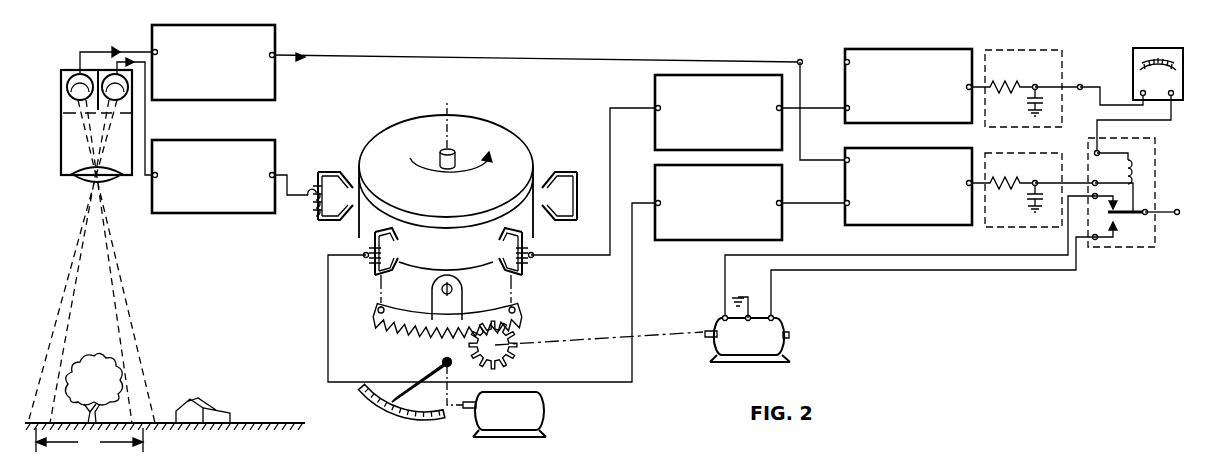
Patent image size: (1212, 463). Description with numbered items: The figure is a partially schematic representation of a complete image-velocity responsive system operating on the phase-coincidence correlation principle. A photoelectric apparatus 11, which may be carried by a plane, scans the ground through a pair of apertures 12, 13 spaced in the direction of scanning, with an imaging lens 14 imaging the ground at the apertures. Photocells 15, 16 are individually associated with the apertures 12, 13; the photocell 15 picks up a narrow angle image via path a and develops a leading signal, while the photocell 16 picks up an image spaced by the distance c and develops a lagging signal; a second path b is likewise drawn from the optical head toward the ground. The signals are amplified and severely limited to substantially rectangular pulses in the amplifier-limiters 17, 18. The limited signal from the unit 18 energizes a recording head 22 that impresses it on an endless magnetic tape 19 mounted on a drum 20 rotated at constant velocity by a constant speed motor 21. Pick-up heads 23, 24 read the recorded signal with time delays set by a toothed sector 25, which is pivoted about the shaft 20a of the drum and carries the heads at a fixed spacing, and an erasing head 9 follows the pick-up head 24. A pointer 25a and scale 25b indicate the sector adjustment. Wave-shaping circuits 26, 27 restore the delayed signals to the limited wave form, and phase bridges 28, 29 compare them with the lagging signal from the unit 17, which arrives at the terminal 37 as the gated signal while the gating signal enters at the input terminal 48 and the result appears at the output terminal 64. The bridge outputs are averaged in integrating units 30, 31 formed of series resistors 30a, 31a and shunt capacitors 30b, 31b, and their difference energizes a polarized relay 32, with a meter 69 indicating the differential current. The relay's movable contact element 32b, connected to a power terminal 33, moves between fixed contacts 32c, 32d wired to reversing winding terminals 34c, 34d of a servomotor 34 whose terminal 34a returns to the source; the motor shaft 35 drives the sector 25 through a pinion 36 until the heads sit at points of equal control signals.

The erasing head 9 is at (575, 190).
The photoelectric apparatus 11 is at (62, 148).
The aperture 12 is at (82, 120).
The aperture 13 is at (112, 122).
The imaging lens 14 is at (88, 180).
The photocell 15 is at (68, 92).
The photocell 16 is at (125, 94).
The amplifier-limiter 17 is at (275, 66).
The amplifier-limiter 18 is at (264, 140).
The endless magnetic tape 19 is at (520, 217).
The drum 20 is at (523, 154).
The shaft 20a is at (452, 153).
The constant speed motor 21 is at (530, 410).
The recording head 22 is at (334, 182).
The pick-up head 23 is at (371, 262).
The pick-up head 24 is at (527, 265).
The toothed sector 25 is at (374, 322).
The pointer 25a is at (440, 362).
The scale 25b is at (378, 400).
The wave-shaping circuit 26 is at (655, 90).
The wave-shaping circuit 27 is at (670, 238).
The phase bridge 28 is at (893, 120).
The phase bridge 29 is at (893, 222).
The averaging unit 30 is at (1029, 88).
The series resistor 30a is at (1010, 80).
The shunt capacitor 30b is at (1046, 100).
The averaging unit 31 is at (1017, 203).
The series resistor 31a is at (1012, 177).
The shunt capacitor 31b is at (1026, 198).
The polarized relay 32 is at (1105, 209).
The contact element 32b is at (1124, 216).
The fixed contact 32c is at (1118, 226).
The fixed contact 32d is at (1104, 214).
The terminal 33 is at (1177, 216).
The servomotor 34 is at (749, 311).
The motor terminal 34a is at (754, 300).
The reversing winding terminal 34c is at (776, 316).
The reversing winding terminal 34d is at (722, 314).
The shaft 35 is at (673, 336).
The pinion 36 is at (515, 353).
The input terminal 37 is at (845, 66).
The input terminal 48 is at (845, 112).
The output terminal 64 is at (1083, 84).
The meter 69 is at (1133, 56).
The path a is at (128, 306).
The beam path b is at (64, 290).
The distance c is at (89, 440).